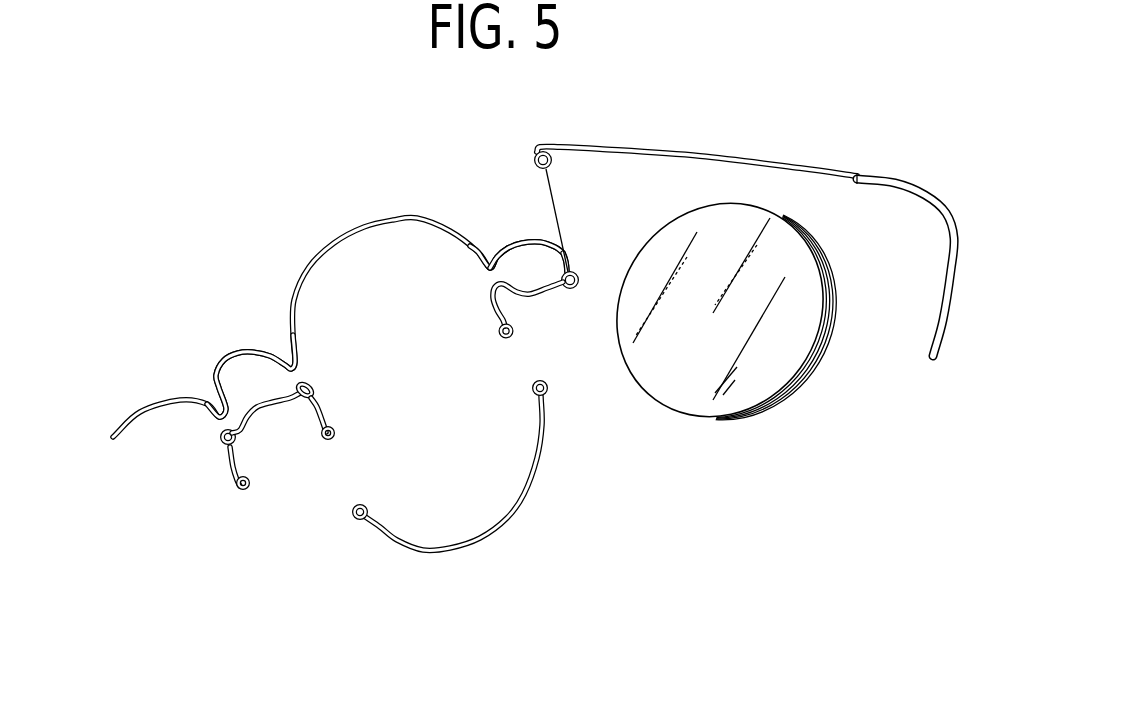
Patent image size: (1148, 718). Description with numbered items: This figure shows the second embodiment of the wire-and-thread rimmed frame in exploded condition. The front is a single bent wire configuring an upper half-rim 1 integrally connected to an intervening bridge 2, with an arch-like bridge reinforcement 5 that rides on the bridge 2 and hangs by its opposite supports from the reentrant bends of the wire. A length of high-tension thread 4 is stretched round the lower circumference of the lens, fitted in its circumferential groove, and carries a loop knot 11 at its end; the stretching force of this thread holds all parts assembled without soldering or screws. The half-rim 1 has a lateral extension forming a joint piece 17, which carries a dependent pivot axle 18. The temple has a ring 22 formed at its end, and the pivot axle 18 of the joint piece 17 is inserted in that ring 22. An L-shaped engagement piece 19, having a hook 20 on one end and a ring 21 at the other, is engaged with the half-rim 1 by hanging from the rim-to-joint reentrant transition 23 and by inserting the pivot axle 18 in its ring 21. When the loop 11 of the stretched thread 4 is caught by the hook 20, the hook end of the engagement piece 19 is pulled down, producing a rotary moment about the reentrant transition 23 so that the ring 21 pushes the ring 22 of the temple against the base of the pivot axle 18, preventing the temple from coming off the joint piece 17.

The upper half-rim 1 is at (348, 243).
The bridge 2 is at (236, 349).
The length of high-tension thread 4 is at (493, 528).
The arch-like bridge reinforcement 5 is at (258, 410).
The loop knot 11 is at (549, 389).
The joint piece 17 is at (516, 245).
The pivot axle 18 is at (566, 252).
The L-shaped engagement piece 19 is at (543, 304).
The hook 20 is at (502, 340).
The ring 21 is at (575, 301).
The ring 22 is at (533, 156).
The rim-to-joint reentrant transition 23 is at (485, 262).